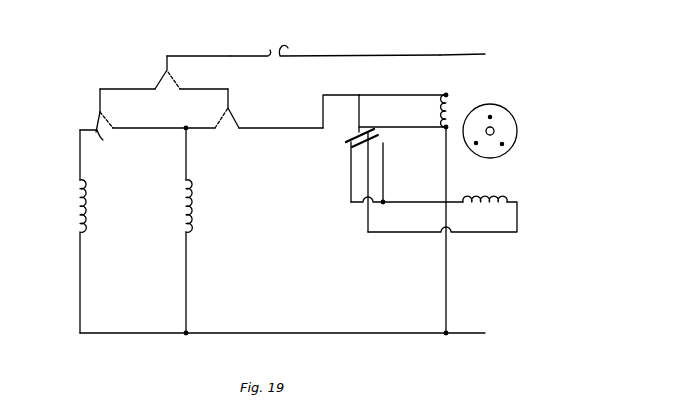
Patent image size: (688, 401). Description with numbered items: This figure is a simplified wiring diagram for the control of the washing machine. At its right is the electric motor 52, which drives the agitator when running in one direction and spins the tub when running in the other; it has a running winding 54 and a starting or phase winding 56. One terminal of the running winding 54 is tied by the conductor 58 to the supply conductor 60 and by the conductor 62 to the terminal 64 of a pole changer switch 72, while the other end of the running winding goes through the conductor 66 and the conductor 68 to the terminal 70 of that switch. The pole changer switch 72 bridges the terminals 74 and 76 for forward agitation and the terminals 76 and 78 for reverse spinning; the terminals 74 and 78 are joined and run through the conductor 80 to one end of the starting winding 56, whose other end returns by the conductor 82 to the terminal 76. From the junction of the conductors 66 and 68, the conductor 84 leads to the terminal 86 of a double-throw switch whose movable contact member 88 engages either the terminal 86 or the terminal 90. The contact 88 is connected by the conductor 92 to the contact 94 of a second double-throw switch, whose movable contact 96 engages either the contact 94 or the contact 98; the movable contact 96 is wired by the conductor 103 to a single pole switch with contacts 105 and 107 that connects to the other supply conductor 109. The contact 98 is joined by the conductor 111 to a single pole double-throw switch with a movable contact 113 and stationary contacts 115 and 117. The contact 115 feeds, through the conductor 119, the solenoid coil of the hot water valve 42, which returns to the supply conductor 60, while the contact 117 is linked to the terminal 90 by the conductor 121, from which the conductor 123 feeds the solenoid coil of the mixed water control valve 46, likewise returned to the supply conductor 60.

The hot water valve 42 is at (74, 218).
The mixed water control valve 46 is at (191, 218).
The electric motor 52 is at (506, 130).
The running winding 54 is at (443, 108).
The starting or phase winding 56 is at (485, 211).
The conductor 58 is at (446, 252).
The supply conductor 60 is at (468, 334).
The conductor 62 is at (394, 126).
The terminal 64 is at (371, 126).
The conductor 66 is at (395, 94).
The conductor 68 is at (357, 106).
The terminal 70 is at (350, 136).
The pole changer switch 72 is at (376, 138).
The terminal 74 is at (346, 148).
The terminal 76 is at (364, 142).
The terminal 78 is at (384, 142).
The conductor 80 is at (404, 200).
The conductor 82 is at (517, 222).
The conductor 84 is at (286, 128).
The terminal 86 is at (238, 130).
The movable contact member 88 is at (232, 116).
The terminal 90 is at (218, 128).
The conductor 92 is at (202, 89).
The contact 94 is at (180, 88).
The movable contact 96 is at (168, 74).
The contact 98 is at (166, 86).
The conductor 103 is at (226, 56).
The contact 105 is at (268, 54).
The contact 107 is at (359, 42).
The supply conductor 109 is at (439, 55).
The conductor 111 is at (128, 90).
The movable contact 113 is at (92, 120).
The stationary contact 115 is at (104, 136).
The stationary contact 117 is at (120, 130).
The conductor 119 is at (80, 158).
The conductor 121 is at (170, 128).
The conductor 123 is at (186, 166).